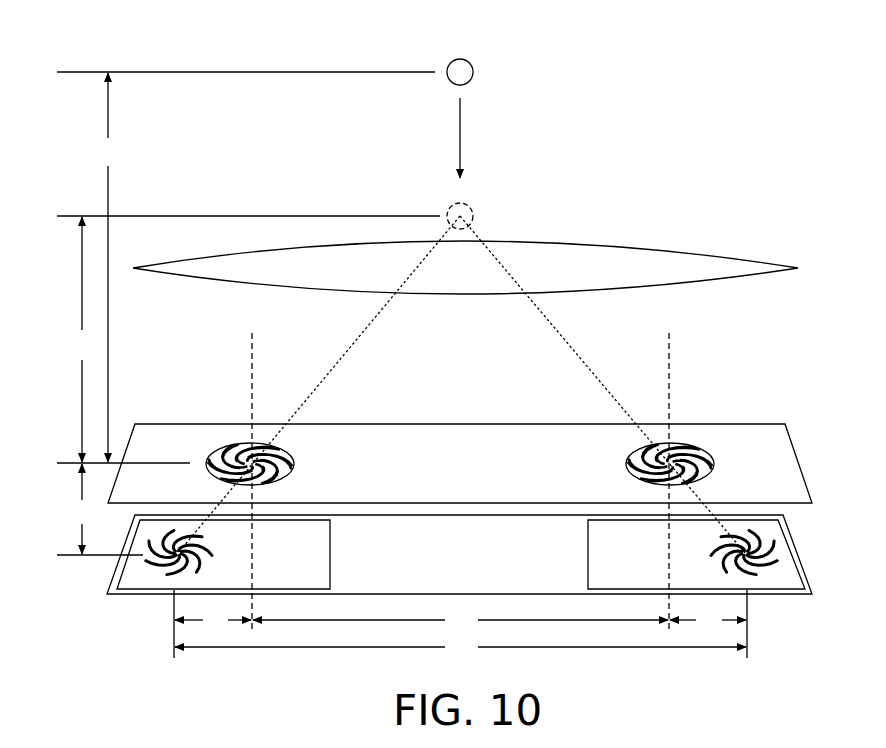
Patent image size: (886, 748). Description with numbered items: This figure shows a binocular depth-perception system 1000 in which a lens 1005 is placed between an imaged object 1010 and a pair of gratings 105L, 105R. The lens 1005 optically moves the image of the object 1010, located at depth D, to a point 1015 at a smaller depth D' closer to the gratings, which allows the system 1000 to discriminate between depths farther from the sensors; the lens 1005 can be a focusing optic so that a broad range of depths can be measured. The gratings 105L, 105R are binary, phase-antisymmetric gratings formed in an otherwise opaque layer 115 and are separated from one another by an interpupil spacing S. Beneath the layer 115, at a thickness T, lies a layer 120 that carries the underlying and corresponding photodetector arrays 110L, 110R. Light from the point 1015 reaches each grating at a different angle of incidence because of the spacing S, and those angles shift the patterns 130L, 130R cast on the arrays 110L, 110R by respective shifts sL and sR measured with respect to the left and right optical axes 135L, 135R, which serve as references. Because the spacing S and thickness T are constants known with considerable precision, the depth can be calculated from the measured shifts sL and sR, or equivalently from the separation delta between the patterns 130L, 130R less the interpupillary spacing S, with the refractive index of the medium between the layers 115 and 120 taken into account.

The binocular depth-perception system 1000 is at (133, 27).
The imaged object 1010 is at (471, 64).
The point 1015 is at (462, 203).
The lens 1005 is at (613, 279).
The left optical axis 135L is at (254, 368).
The right optical axis 135R is at (671, 368).
The opaque layer 115 is at (477, 474).
The left grating 105L is at (215, 452).
The right grating 105R is at (707, 453).
The layer 120 is at (477, 564).
The left photodetector array 110L is at (310, 564).
The right photodetector array 110R is at (640, 564).
The left pattern 130L is at (205, 560).
The right pattern 130R is at (718, 568).